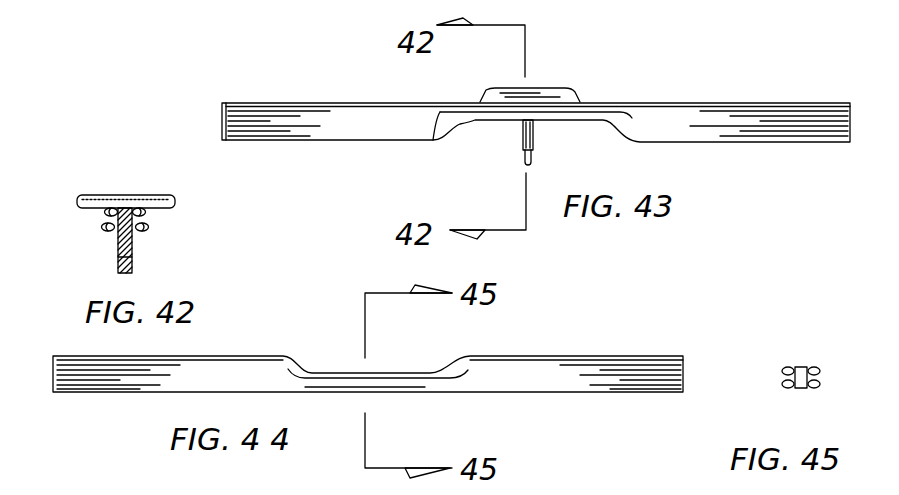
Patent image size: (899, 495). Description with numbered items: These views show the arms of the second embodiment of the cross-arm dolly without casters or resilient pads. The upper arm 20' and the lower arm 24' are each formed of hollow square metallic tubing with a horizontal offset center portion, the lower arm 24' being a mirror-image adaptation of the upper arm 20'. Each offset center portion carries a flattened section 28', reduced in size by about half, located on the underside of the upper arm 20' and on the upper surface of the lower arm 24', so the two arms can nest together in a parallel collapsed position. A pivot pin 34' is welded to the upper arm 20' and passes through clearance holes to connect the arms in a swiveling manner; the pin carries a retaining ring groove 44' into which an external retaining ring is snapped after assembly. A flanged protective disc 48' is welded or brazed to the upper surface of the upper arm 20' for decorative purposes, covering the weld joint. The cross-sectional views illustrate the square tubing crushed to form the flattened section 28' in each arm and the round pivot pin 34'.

In FIG. 42, the upper arm 20' is at (172, 221).
In FIG. 43, the upper arm 20' is at (536, 84).
In FIG. 44, the lower arm 24' is at (375, 336).
In FIG. 45, the lower arm 24' is at (802, 347).
In FIG. 43, the flattened section 28' is at (529, 99).
In FIG. 44, the flattened section 28' is at (378, 351).
In FIG. 42, the pivot pin 34' is at (204, 245).
In FIG. 43, the pivot pin 34' is at (567, 151).
In FIG. 42, the retaining ring groove 44' is at (84, 279).
In FIG. 43, the retaining ring groove 44' is at (482, 170).
In FIG. 42, the flanged protective disc 48' is at (121, 156).
In FIG. 43, the flanged protective disc 48' is at (564, 64).